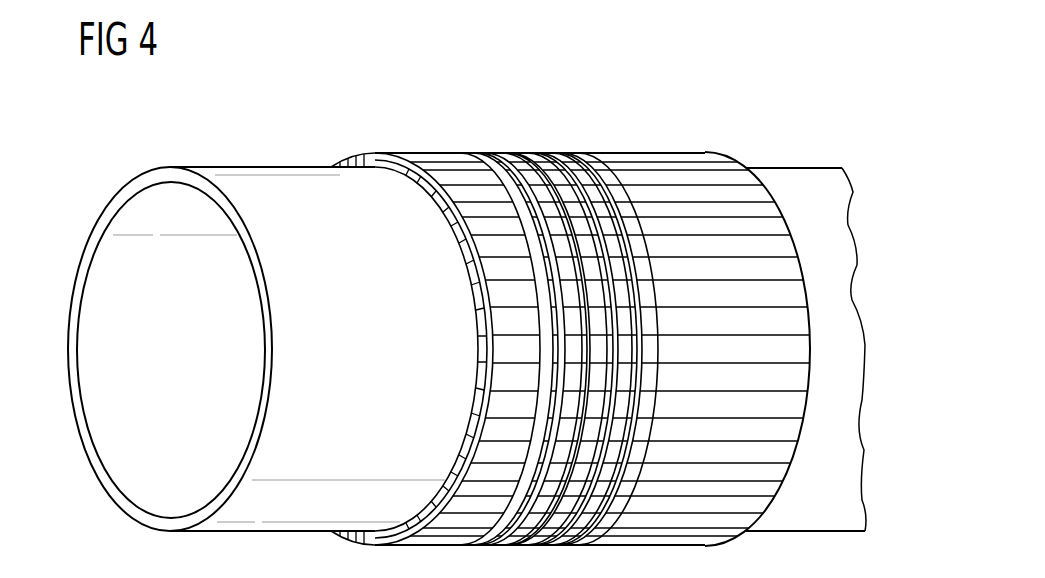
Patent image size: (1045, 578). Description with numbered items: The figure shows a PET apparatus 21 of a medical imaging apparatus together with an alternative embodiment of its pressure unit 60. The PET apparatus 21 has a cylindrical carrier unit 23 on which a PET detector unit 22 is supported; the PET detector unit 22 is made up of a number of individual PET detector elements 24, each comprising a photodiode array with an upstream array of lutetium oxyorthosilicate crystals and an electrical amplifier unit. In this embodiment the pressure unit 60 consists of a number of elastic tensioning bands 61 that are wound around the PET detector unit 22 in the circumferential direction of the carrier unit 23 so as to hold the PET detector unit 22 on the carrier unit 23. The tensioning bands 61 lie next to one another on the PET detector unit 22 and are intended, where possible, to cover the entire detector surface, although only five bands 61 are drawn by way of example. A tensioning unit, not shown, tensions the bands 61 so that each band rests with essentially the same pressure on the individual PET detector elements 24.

The PET apparatus 21 is at (336, 135).
The PET detector unit 22 is at (663, 137).
The carrier unit 23 is at (267, 192).
The PET detector elements 24 is at (795, 295).
The pressure unit 60 is at (455, 146).
The elastic tensioning bands 61 is at (548, 187).